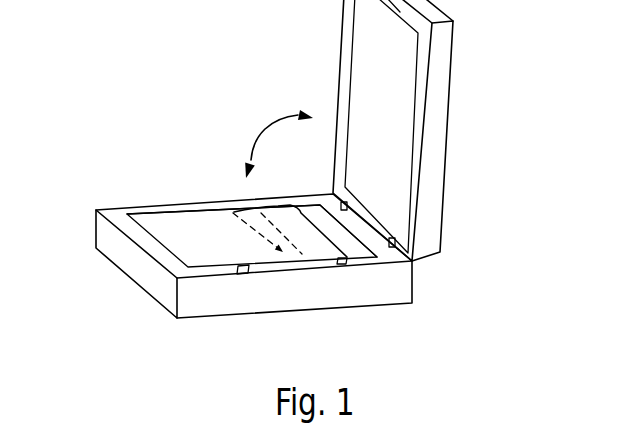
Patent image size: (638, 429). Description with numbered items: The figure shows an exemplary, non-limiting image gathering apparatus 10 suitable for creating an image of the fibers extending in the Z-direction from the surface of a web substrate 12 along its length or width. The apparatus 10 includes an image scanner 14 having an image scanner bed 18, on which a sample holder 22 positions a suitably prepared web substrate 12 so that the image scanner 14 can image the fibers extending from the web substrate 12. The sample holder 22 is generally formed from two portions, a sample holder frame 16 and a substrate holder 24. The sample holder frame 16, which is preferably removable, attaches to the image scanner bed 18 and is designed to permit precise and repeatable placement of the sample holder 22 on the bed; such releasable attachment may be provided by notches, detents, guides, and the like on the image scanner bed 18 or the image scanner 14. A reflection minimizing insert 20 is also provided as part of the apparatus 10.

The image gathering apparatus 10 is at (202, 90).
The web substrate 12 is at (311, 253).
The image scanner 14 is at (148, 308).
The sample holder frame 16 is at (355, 262).
The image scanner bed 18 is at (191, 203).
The reflection minimizing insert 20 is at (413, 156).
The sample holder 22 is at (126, 214).
The substrate holder 24 is at (274, 246).